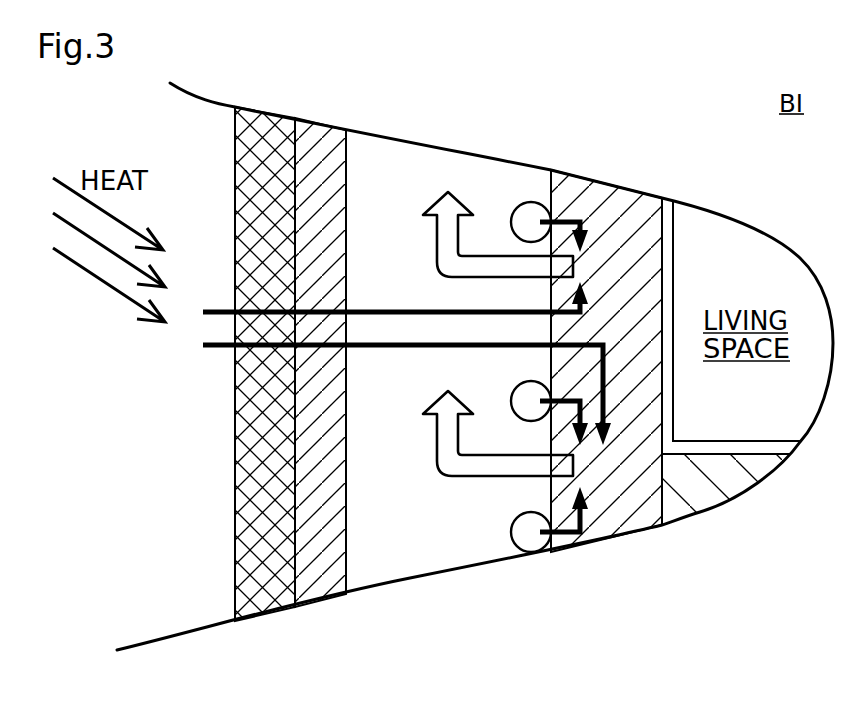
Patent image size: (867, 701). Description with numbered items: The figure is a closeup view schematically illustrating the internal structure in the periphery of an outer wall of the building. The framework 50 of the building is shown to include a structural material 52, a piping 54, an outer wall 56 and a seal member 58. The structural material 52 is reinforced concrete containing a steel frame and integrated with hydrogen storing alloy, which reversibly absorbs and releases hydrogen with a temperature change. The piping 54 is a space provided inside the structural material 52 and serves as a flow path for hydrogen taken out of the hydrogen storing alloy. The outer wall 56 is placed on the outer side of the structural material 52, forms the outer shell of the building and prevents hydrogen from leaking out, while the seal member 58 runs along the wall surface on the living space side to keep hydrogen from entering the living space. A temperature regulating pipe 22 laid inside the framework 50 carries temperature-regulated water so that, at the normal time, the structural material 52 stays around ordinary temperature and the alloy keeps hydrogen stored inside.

The framework 50 is at (161, 411).
The structural material 52 is at (330, 587).
The piping 54 is at (348, 541).
The outer wall 56 is at (235, 601).
The seal member 58 is at (666, 198).
The temperature regulating pipe 22 is at (528, 539).